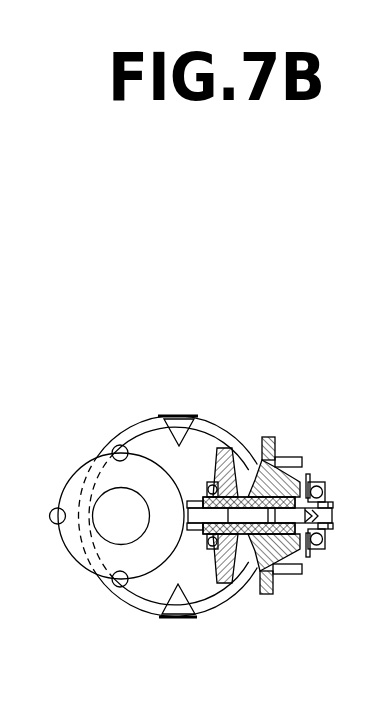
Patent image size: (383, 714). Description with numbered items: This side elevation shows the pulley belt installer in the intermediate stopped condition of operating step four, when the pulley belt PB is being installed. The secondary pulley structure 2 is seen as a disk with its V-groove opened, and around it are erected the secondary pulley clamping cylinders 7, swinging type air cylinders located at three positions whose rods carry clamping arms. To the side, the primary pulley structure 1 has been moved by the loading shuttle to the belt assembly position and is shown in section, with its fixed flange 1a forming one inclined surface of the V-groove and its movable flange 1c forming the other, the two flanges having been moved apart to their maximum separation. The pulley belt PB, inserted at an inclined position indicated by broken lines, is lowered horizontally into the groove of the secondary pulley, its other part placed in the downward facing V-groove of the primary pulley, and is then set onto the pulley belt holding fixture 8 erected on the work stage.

The primary pulley structure 1 is at (279, 493).
The fixed flange 1a is at (252, 473).
The movable flange 1c is at (220, 457).
The secondary pulley structure 2 is at (75, 569).
The secondary pulley clamping cylinders 7 is at (113, 447).
The pulley belt holding fixture 8 is at (181, 415).
The pulley belt PB is at (137, 606).